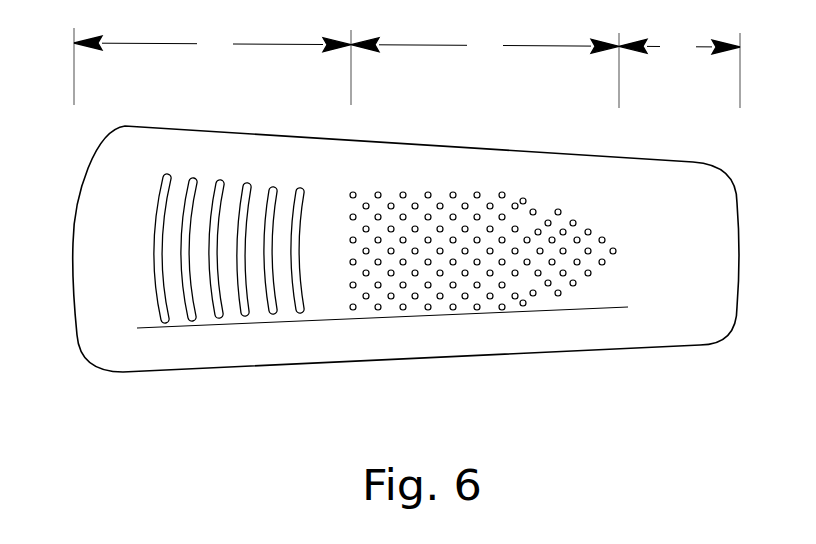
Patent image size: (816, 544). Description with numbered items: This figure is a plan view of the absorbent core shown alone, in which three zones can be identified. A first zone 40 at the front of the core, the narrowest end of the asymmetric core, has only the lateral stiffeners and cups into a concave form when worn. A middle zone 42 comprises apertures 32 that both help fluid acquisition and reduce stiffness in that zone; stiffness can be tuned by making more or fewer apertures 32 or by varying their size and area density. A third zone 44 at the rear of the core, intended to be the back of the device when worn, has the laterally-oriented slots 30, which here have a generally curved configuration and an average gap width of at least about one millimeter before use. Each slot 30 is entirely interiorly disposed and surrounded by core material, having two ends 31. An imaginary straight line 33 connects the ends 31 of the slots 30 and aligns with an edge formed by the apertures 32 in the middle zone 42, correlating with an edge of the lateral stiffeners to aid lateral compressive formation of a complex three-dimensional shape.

The slots 30 is at (162, 287).
The ends 31 is at (167, 173).
The apertures 32 is at (438, 276).
The imaginary straight line 33 is at (577, 310).
The first zone 40 is at (679, 70).
The middle zone 42 is at (485, 69).
The third zone 44 is at (212, 66).